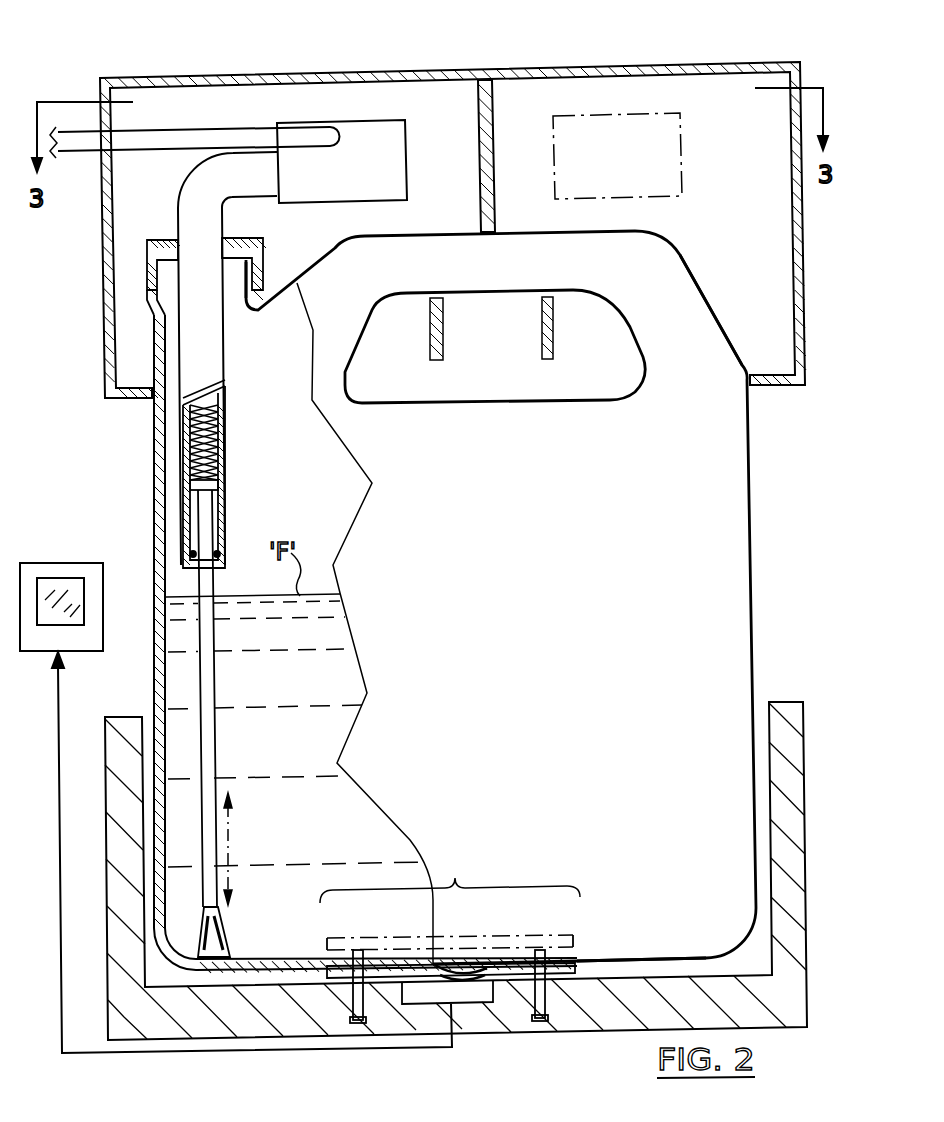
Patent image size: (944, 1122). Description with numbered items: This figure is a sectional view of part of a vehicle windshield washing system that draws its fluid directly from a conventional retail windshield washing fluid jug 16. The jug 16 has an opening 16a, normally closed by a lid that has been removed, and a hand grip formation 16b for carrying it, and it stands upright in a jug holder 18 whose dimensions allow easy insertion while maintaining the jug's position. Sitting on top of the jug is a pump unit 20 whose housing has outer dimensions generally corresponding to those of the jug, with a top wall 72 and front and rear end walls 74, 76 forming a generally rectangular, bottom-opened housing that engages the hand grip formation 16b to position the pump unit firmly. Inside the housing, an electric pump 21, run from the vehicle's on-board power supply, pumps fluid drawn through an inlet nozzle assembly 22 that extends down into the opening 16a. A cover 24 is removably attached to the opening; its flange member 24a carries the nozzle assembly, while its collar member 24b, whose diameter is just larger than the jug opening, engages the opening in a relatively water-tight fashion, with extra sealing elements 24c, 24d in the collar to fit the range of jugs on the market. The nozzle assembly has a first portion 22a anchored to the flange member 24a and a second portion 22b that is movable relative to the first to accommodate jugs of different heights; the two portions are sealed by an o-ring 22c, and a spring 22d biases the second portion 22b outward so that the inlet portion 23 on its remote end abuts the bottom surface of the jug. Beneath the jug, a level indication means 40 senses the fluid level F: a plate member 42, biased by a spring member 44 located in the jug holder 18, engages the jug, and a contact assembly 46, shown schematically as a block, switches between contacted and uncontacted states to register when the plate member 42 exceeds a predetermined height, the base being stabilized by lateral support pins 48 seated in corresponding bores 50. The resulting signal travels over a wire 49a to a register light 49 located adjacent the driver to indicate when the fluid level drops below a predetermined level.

The windshield washing fluid jug 16 is at (757, 526).
The opening 16a is at (230, 285).
The hand grip formation 16b is at (690, 268).
The jug holder 18 is at (106, 782).
The pump unit 20 is at (280, 66).
The electric pump 21 is at (395, 121).
The inlet nozzle assembly 22 is at (239, 428).
The first portion 22a is at (222, 486).
The second portion 22b is at (217, 684).
The o-ring 22c is at (225, 556).
The spring 22d is at (183, 437).
The inlet portion 23 is at (225, 949).
The cover 24 is at (268, 257).
The flange member 24a is at (248, 239).
The collar member 24b is at (150, 252).
The sealing disc 24c is at (175, 256).
The sealing ring 24d is at (157, 273).
The level indication means 40 is at (450, 879).
The plate member 42 is at (583, 964).
The spring member 44 is at (493, 960).
The contact assembly 46 is at (470, 1010).
The lateral support pins 48 is at (549, 996).
The register light 49 is at (65, 562).
The wire 49a is at (61, 701).
The bore 50 is at (545, 1026).
The top wall 72 is at (566, 76).
The front end wall 74 is at (100, 79).
The rear end wall 76 is at (804, 295).